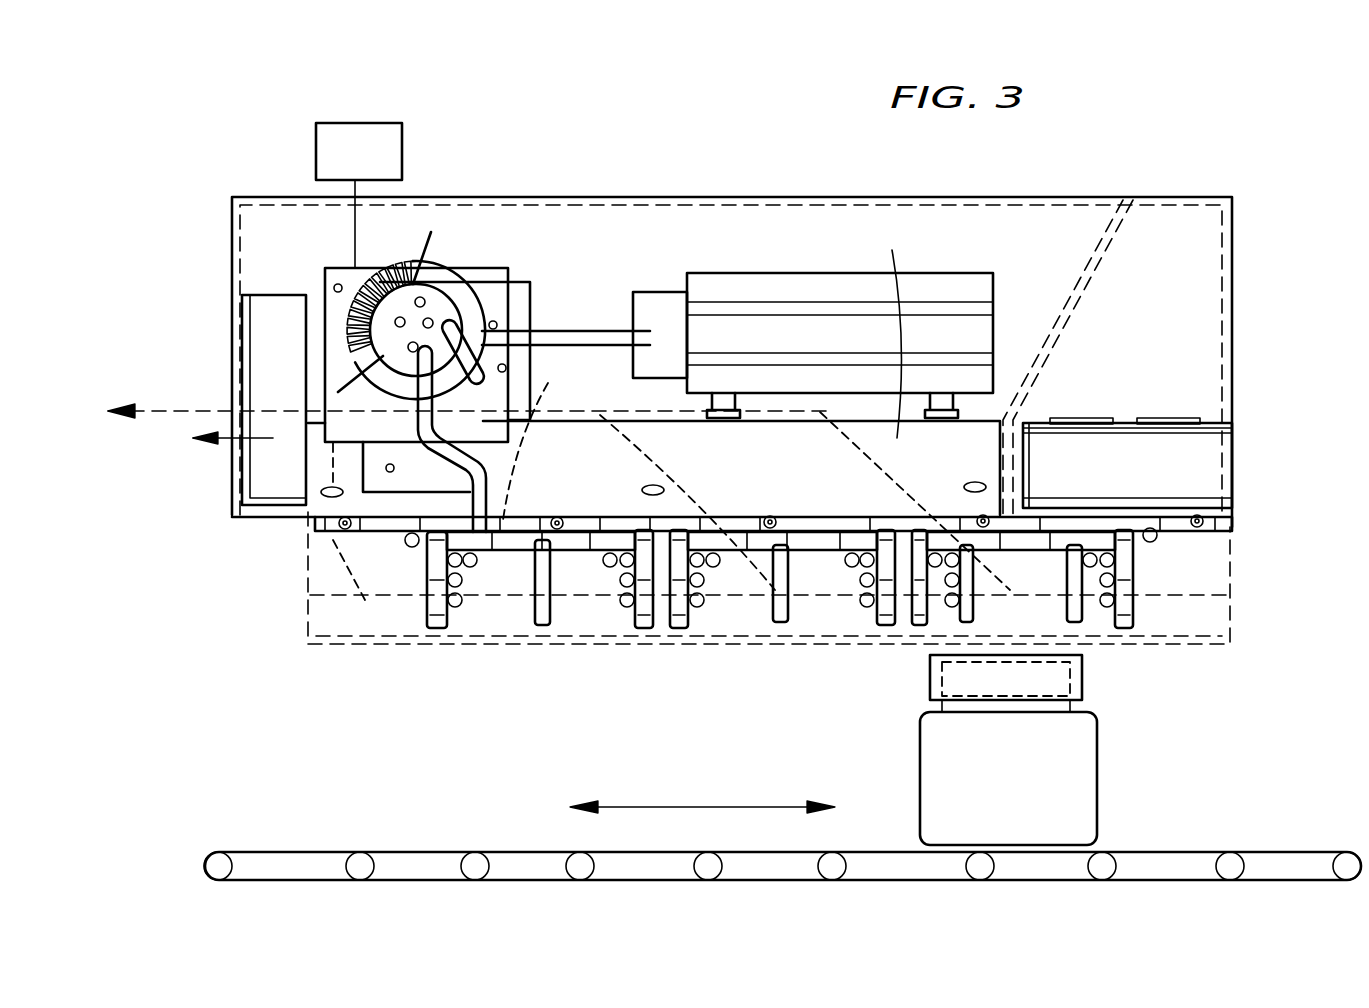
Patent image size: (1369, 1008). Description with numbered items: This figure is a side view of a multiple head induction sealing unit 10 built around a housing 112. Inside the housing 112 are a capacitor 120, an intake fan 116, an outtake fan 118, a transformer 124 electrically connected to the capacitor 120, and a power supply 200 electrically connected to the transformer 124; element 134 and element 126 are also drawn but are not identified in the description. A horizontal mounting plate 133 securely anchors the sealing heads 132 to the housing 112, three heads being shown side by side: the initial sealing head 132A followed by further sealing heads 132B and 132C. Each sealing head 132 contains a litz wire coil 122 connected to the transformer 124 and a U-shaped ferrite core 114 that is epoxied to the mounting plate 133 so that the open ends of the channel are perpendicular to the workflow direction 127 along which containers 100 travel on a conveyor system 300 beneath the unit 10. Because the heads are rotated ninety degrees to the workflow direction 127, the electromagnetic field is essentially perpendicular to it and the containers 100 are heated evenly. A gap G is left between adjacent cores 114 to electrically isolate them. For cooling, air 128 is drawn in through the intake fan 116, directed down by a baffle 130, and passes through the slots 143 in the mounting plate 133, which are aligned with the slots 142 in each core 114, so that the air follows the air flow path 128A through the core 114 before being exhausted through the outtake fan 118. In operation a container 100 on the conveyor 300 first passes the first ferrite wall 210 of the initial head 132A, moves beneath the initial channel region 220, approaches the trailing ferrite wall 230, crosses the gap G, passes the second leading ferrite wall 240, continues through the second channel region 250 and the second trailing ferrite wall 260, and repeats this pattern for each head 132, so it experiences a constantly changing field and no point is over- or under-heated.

The multiple head induction sealing unit 10 is at (706, 135).
The container 100 is at (1035, 800).
The housing 112 is at (1235, 238).
The U-shaped ferrite core 114 is at (1130, 632).
The intake fan 116 is at (1208, 477).
The outtake fan 118 is at (258, 482).
The capacitor 120 is at (978, 282).
The litz wire coil 122 is at (628, 606).
The transformer 124 is at (458, 288).
The hose 126 is at (355, 648).
The workflow direction 127 is at (760, 808).
The cooling air 128 is at (1130, 405).
The air flow path 128A is at (1258, 377).
The baffle 130 is at (1130, 205).
The sealing head 132 is at (645, 552).
The initial sealing head 132A is at (425, 567).
The second pin 132B is at (700, 630).
The third pin 132C is at (1133, 632).
The horizontal mounting plate 133 is at (1308, 568).
The shaft coupling 134 is at (870, 331).
The slots formed in the core 142 is at (682, 512).
The slots formed in the horizontal mounting plate 143 is at (312, 560).
The power supply 200 is at (359, 195).
The first ferrite wall 210 is at (425, 605).
The initial channel region 220 is at (550, 632).
The trailing ferrite wall 230 is at (645, 632).
The second leading ferrite wall 240 is at (688, 632).
The second channel region 250 is at (770, 627).
The second trailing ferrite wall 260 is at (882, 633).
The conveyor system 300 is at (373, 850).
The gap G is at (663, 627).